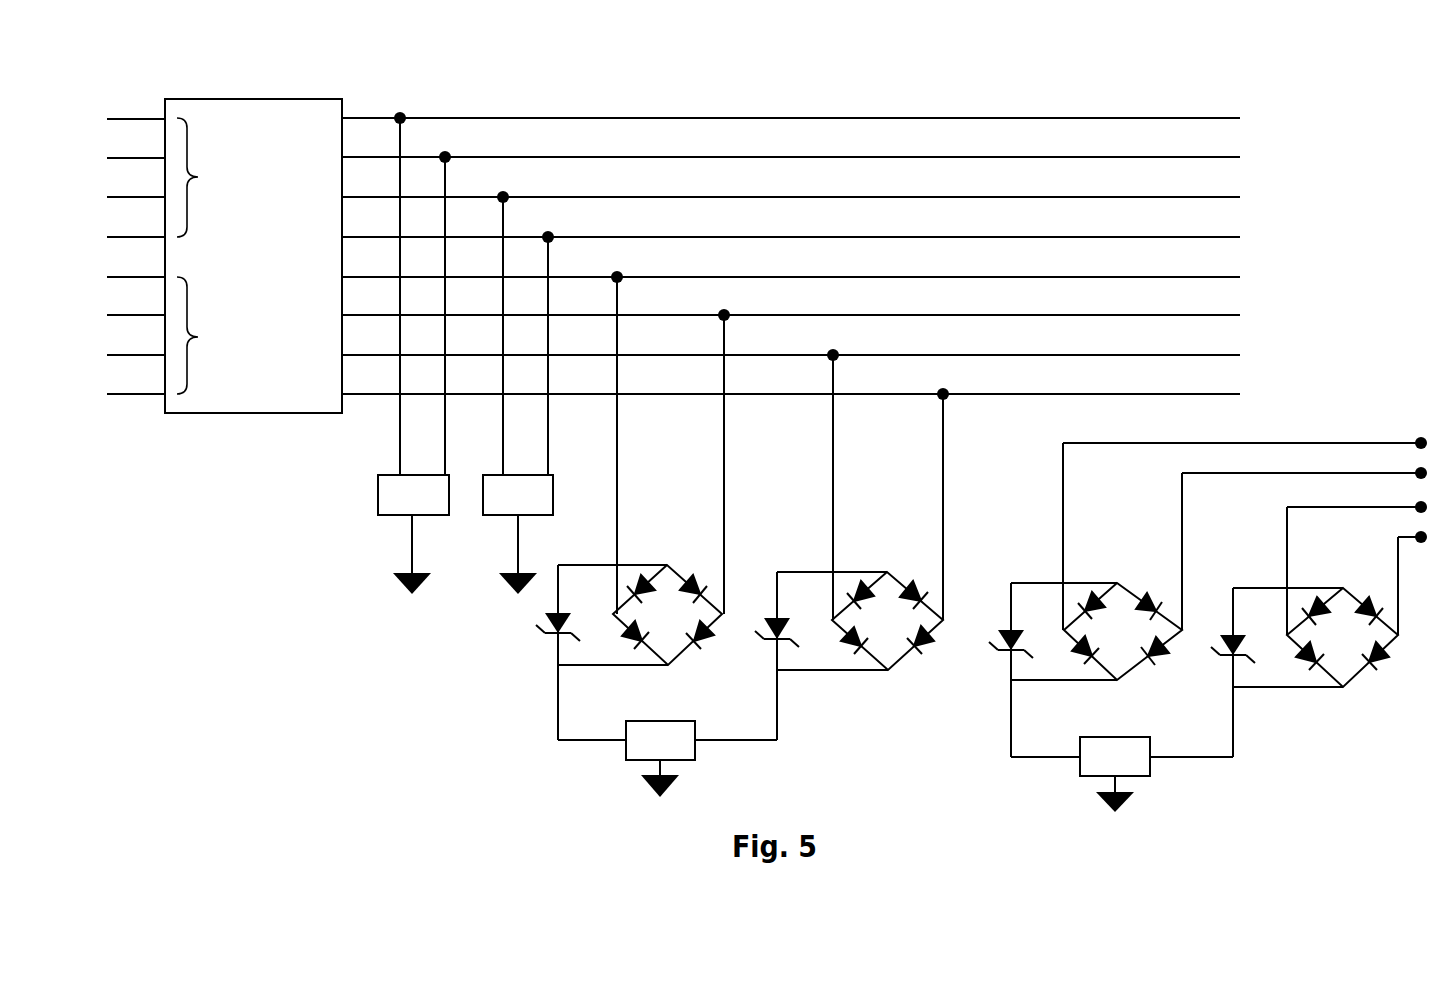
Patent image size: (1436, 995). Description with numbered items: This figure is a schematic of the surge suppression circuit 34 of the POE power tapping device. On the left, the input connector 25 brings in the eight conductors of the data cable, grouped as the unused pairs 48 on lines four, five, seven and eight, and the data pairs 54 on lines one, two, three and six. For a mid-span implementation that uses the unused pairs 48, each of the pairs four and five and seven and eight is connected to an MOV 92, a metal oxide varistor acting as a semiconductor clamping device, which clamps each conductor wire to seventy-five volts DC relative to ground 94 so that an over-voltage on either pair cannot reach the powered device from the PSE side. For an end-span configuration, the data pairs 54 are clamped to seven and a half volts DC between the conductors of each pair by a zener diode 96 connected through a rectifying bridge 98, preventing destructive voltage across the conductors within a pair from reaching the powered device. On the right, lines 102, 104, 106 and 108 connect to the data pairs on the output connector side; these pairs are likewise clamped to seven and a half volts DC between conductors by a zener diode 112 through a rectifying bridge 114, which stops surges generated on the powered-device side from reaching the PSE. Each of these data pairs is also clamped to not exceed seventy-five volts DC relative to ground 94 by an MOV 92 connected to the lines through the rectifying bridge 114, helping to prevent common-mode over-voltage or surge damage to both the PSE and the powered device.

The surge suppression circuit 34 is at (791, 336).
The input connector 25 is at (253, 256).
The unused pairs 48 is at (207, 154).
The data pairs 54 is at (194, 346).
The MOV 92 is at (805, 625).
The ground 94 is at (751, 670).
The zener diode 96 is at (695, 652).
The rectifying bridge 98 is at (778, 617).
The line 102 is at (1245, 520).
The line 104 is at (1304, 536).
The line 106 is at (1357, 556).
The line 108 is at (1394, 571).
The zener diode 112 is at (1144, 670).
The rectifying bridge 114 is at (1231, 635).